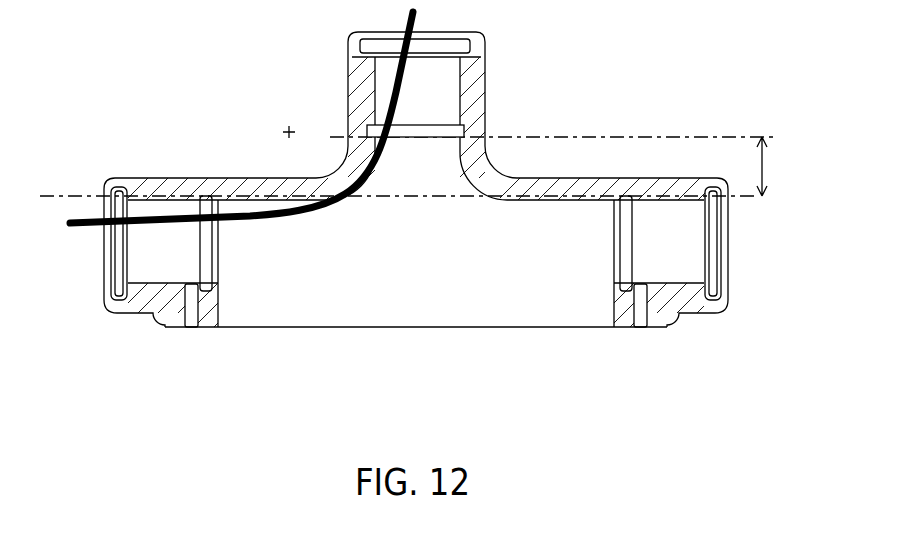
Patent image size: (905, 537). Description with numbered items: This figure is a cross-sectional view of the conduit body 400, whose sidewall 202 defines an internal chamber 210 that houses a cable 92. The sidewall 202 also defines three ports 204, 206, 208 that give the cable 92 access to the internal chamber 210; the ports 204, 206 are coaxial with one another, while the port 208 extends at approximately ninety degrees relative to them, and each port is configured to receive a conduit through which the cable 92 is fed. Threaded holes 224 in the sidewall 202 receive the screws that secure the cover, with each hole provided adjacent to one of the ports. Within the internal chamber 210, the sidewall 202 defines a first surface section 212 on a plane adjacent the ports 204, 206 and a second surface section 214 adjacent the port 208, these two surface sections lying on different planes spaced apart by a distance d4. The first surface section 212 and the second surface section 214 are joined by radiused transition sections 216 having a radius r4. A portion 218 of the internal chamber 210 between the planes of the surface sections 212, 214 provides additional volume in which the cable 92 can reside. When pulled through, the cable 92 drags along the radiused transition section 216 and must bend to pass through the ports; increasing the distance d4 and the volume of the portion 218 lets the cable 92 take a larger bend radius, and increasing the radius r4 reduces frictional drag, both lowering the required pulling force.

The conduit body 400 is at (424, 216).
The cable 92 is at (246, 219).
The sidewall 202 is at (216, 178).
The port 204 is at (103, 258).
The port 206 is at (728, 296).
The port 208 is at (480, 40).
The internal chamber 210 is at (357, 330).
The first surface section 212 is at (300, 207).
The second surface section 214 is at (452, 138).
The radiused transition section 216 is at (320, 182).
The portion of the internal chamber 218 is at (388, 180).
The threaded hole 224 is at (181, 330).
The radius of the radiused transition sections r4 is at (330, 153).
The distance d4 is at (783, 166).